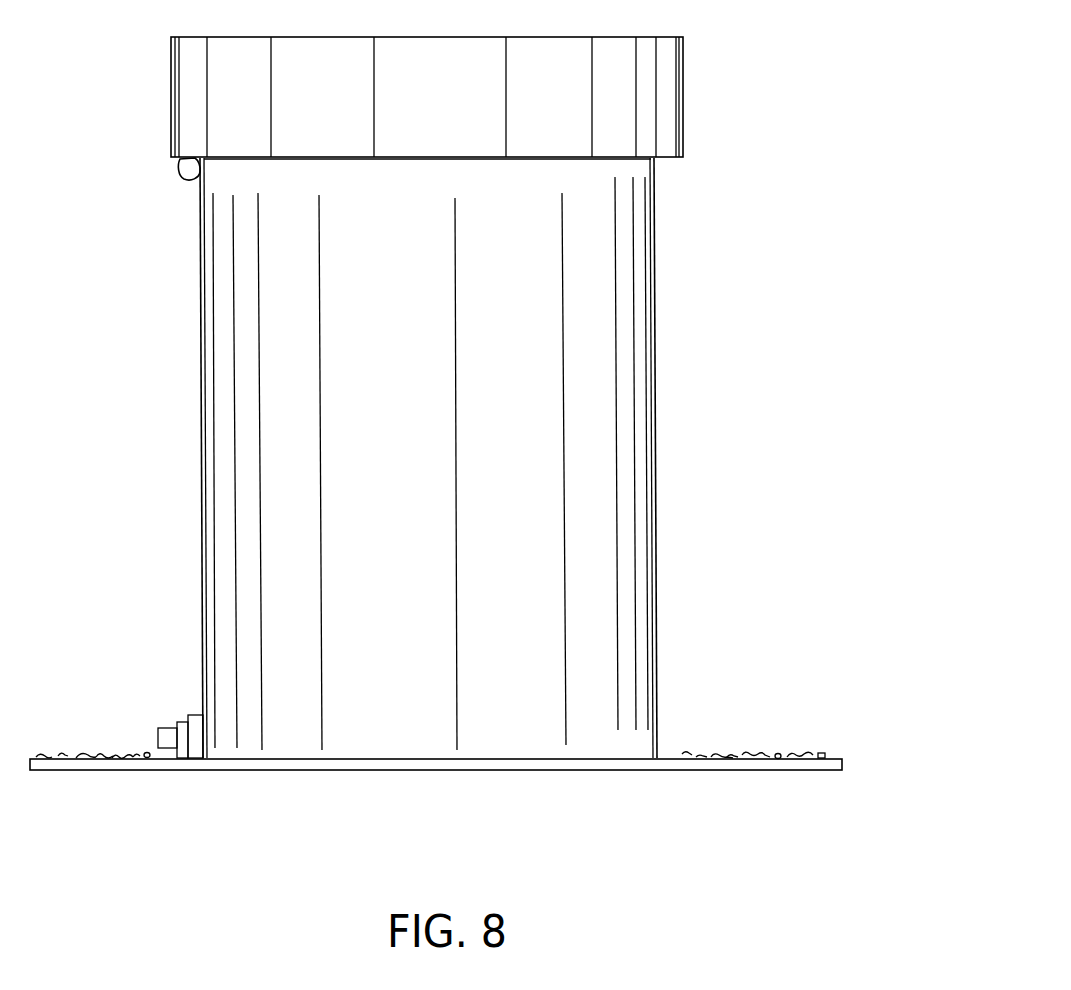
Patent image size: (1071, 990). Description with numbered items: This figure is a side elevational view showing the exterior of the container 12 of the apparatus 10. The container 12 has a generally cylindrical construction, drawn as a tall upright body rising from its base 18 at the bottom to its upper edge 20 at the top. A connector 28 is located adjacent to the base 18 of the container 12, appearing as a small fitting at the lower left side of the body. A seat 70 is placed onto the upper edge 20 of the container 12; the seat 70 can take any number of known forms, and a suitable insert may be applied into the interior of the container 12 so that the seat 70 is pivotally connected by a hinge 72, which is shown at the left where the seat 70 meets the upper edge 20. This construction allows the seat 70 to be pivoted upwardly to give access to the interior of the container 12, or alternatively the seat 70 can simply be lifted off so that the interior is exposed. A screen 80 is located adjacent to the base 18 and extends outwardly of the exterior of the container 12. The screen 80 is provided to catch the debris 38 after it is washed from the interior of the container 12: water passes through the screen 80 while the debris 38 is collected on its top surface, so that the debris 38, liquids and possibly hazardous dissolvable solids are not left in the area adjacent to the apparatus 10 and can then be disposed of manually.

The apparatus 10 is at (692, 320).
The container 12 is at (656, 402).
The base 18 is at (518, 758).
The upper edge 20 is at (560, 159).
The connector 28 is at (183, 722).
The debris 38 is at (100, 750).
The seat 70 is at (657, 100).
The hinge 72 is at (185, 180).
The screen 80 is at (735, 756).